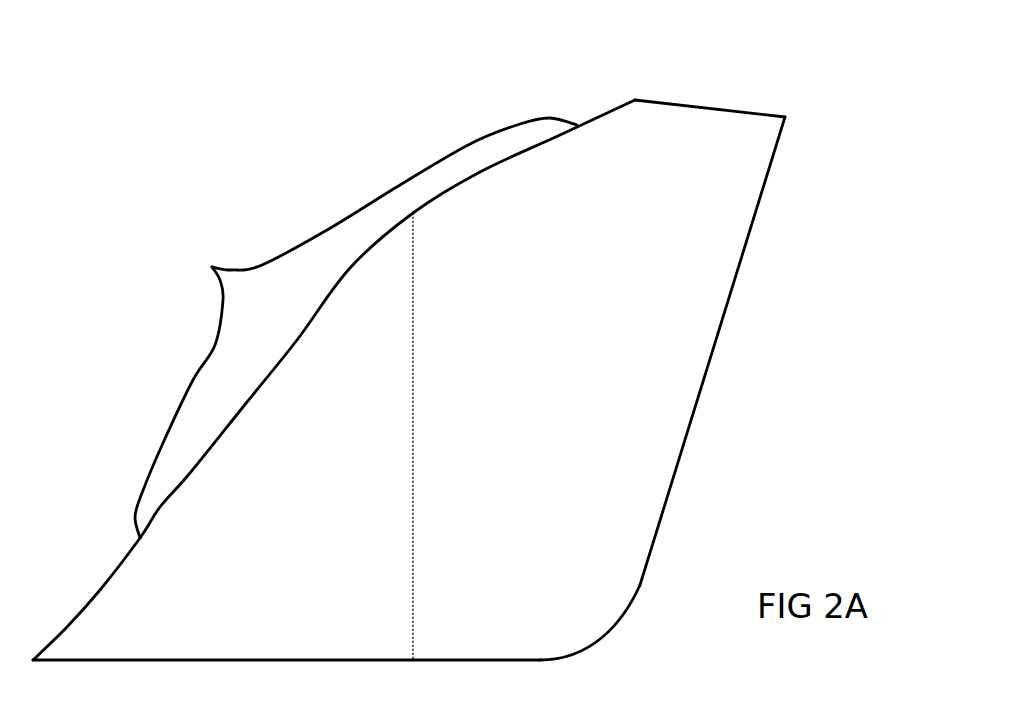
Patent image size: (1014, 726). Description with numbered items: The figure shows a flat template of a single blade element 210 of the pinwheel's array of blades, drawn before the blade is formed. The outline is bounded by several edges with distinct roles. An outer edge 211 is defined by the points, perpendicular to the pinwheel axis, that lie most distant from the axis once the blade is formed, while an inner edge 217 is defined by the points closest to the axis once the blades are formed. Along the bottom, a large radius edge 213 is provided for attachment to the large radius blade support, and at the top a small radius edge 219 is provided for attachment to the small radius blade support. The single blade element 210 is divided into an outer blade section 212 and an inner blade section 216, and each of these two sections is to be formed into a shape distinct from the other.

The single blade element 210 is at (360, 178).
The outer edge 211 is at (179, 390).
The outer blade section 212 is at (212, 535).
The large radius edge 213 is at (138, 662).
The inner blade section 216 is at (610, 317).
The inner edge 217 is at (743, 258).
The small radius edge 219 is at (713, 107).